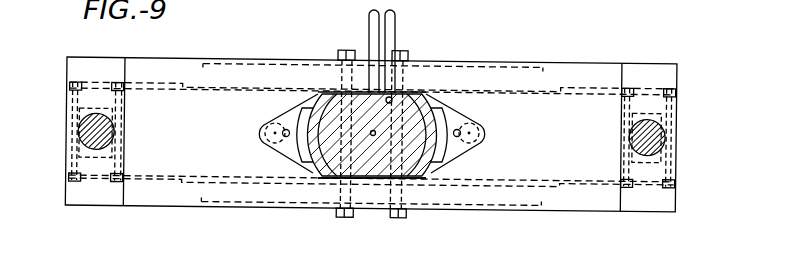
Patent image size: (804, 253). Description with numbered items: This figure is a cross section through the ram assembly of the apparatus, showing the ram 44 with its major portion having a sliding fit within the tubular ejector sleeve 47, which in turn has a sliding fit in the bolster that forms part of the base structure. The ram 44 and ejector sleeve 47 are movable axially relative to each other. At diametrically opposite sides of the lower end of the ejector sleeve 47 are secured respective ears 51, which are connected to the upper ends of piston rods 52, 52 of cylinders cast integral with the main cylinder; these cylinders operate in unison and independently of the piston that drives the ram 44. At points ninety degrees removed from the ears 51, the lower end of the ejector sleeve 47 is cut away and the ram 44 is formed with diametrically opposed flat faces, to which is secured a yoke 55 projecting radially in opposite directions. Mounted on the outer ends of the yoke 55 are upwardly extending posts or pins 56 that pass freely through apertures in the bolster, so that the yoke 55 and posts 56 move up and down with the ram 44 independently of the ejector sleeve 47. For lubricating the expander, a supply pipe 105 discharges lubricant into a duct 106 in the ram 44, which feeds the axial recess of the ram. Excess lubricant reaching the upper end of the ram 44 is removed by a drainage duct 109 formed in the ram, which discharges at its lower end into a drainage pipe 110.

The ram 44 is at (371, 165).
The tubular ejector sleeve 47 is at (432, 156).
The ears 51 is at (272, 147).
The piston rods 52 is at (268, 120).
The yoke 55 is at (476, 73).
The posts or pins 56 is at (83, 142).
The supply pipe 105 is at (369, 20).
The duct 106 is at (338, 174).
The drainage duct 109 is at (392, 101).
The drainage pipe 110 is at (395, 20).